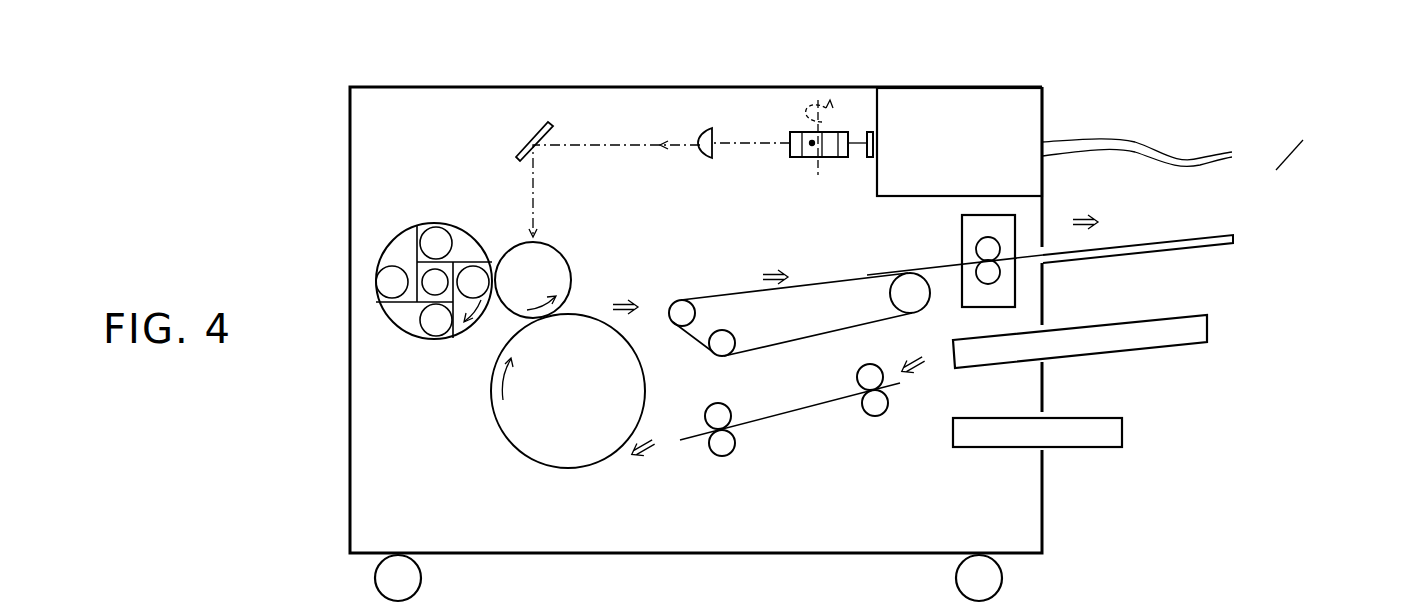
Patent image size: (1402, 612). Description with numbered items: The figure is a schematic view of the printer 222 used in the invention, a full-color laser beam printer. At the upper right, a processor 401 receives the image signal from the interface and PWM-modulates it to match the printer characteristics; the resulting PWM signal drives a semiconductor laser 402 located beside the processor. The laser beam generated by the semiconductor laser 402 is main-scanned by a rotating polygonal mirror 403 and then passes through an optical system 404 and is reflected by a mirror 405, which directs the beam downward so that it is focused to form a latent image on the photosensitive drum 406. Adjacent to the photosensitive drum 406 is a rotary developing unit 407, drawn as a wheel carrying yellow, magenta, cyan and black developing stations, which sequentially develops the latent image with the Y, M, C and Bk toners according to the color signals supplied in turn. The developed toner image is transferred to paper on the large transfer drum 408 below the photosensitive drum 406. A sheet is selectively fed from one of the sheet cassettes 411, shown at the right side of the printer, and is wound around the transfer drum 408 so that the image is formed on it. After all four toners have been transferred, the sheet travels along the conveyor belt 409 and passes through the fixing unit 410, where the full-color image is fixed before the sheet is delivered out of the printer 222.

The printer 222 is at (350, 101).
The processor 401 is at (1035, 117).
The semiconductor laser 402 is at (870, 157).
The polygonal mirror 403 is at (793, 157).
The optical system 404 is at (706, 158).
The mirror 405 is at (551, 124).
The photosensitive drum 406 is at (561, 256).
The rotary developing unit 407 is at (410, 333).
The transfer drum 408 is at (570, 467).
The conveyor belt 409 is at (820, 283).
The fixing unit 410 is at (1015, 233).
The sheet cassettes 411 is at (1088, 418).